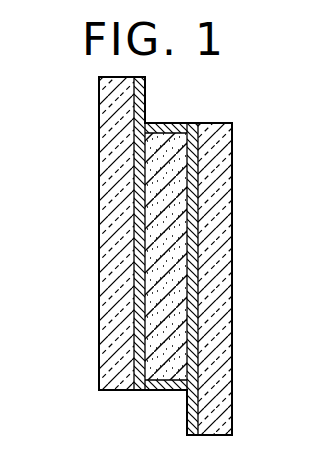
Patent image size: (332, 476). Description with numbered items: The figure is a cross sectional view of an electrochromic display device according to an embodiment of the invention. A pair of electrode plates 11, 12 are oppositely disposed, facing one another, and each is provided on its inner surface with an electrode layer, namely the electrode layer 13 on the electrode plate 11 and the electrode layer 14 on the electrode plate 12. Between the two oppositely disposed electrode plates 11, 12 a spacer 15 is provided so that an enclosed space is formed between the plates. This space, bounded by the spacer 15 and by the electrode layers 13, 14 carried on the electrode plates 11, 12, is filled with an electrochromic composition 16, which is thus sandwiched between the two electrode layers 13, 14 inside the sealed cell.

The electrode plate 11 is at (113, 315).
The electrode plate 12 is at (215, 268).
The electrode layer 13 is at (139, 362).
The electrode layer 14 is at (193, 342).
The spacer 15 is at (168, 123).
The electrochromic composition 16 is at (170, 198).